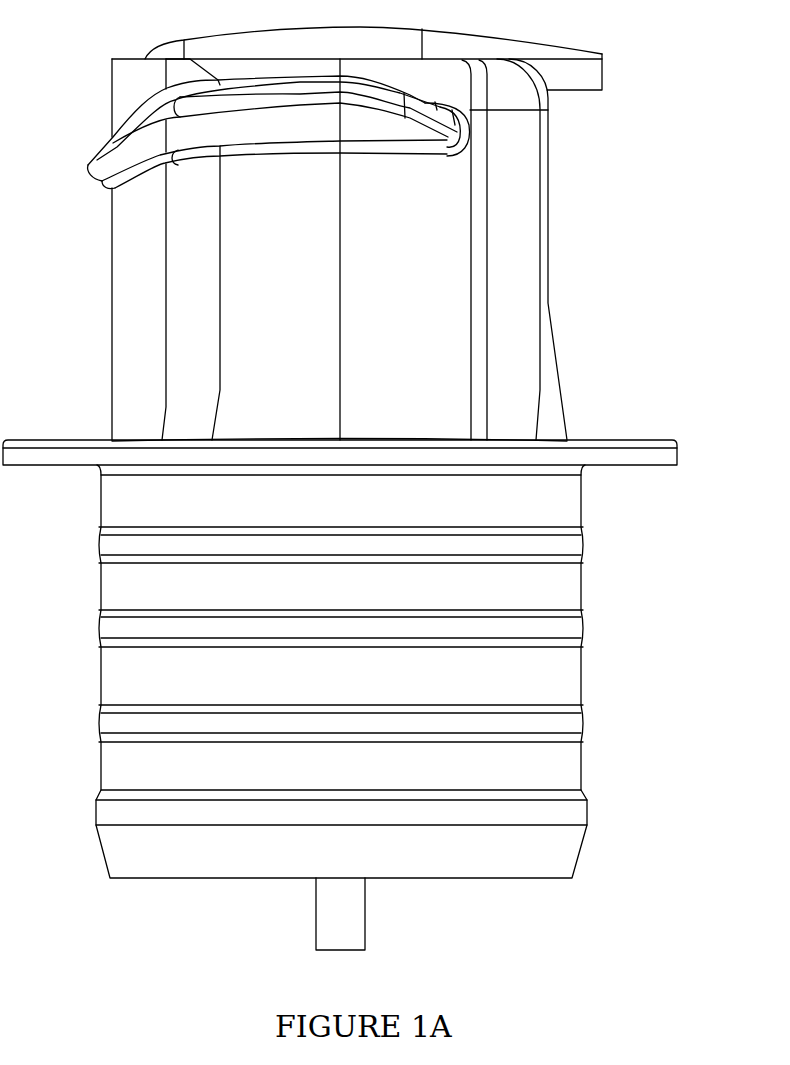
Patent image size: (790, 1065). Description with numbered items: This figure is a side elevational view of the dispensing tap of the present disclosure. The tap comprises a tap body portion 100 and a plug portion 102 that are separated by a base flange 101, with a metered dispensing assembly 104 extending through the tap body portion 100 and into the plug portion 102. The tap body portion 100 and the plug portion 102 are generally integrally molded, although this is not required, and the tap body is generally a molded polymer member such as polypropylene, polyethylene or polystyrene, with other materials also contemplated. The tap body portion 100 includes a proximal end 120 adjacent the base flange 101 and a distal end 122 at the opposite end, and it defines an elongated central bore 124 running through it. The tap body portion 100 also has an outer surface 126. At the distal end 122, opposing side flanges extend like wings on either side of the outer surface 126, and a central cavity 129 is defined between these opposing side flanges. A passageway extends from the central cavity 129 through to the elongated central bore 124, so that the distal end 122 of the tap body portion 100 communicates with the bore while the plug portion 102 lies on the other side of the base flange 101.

The tap body portion 100 is at (562, 306).
The base flange 101 is at (692, 424).
The plug portion 102 is at (598, 632).
The metered dispensing assembly 104 is at (588, 28).
The proximal end 120 is at (97, 403).
The distal end 122 is at (99, 48).
The elongated central bore 124 is at (97, 303).
The outer surface 126 is at (562, 223).
The central cavity 129 is at (562, 145).